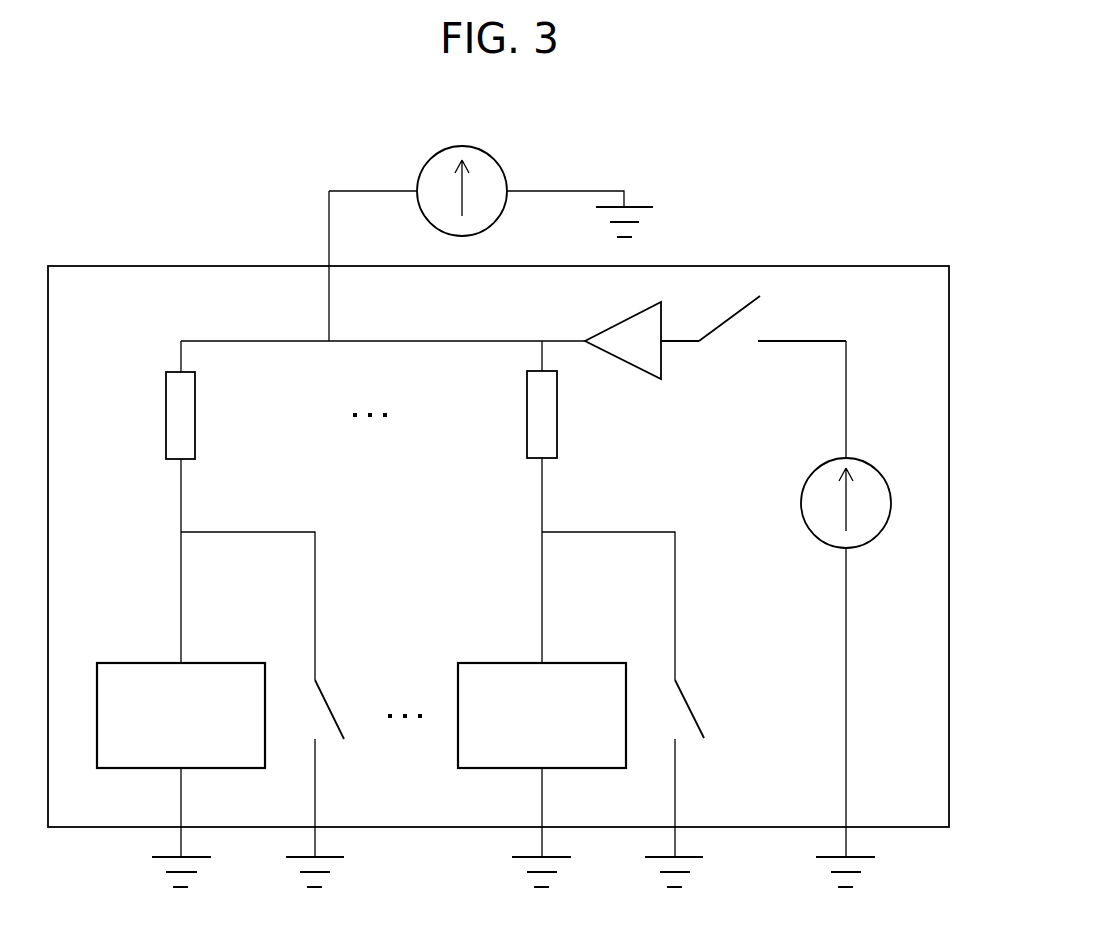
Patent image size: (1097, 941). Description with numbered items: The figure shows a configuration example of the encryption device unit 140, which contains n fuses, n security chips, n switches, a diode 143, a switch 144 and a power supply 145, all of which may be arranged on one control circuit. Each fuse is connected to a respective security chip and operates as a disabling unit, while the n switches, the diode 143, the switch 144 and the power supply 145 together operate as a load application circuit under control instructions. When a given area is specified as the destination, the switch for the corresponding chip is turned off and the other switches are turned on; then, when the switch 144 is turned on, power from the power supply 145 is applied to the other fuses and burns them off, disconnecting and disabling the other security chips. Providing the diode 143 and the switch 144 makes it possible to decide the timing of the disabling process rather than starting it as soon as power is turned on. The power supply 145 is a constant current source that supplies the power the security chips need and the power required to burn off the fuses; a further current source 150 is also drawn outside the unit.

The encryption device unit 140 is at (239, 265).
The diode 143 is at (627, 363).
The switch 144 is at (728, 343).
The power supply 145 is at (878, 470).
The current source 150 is at (496, 152).